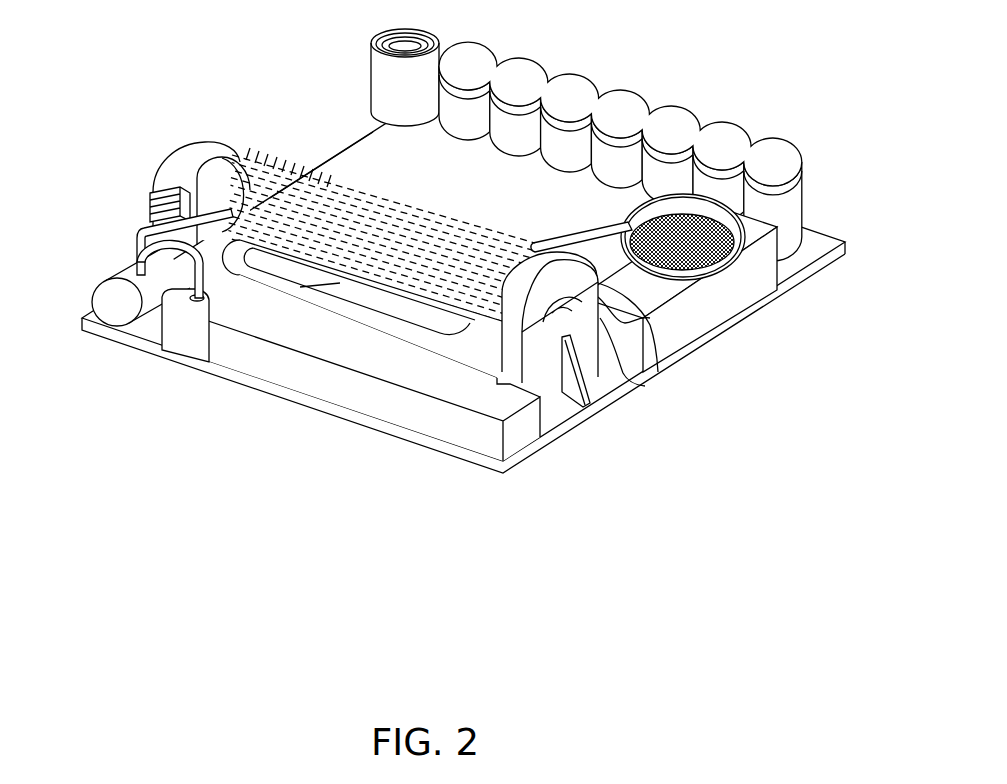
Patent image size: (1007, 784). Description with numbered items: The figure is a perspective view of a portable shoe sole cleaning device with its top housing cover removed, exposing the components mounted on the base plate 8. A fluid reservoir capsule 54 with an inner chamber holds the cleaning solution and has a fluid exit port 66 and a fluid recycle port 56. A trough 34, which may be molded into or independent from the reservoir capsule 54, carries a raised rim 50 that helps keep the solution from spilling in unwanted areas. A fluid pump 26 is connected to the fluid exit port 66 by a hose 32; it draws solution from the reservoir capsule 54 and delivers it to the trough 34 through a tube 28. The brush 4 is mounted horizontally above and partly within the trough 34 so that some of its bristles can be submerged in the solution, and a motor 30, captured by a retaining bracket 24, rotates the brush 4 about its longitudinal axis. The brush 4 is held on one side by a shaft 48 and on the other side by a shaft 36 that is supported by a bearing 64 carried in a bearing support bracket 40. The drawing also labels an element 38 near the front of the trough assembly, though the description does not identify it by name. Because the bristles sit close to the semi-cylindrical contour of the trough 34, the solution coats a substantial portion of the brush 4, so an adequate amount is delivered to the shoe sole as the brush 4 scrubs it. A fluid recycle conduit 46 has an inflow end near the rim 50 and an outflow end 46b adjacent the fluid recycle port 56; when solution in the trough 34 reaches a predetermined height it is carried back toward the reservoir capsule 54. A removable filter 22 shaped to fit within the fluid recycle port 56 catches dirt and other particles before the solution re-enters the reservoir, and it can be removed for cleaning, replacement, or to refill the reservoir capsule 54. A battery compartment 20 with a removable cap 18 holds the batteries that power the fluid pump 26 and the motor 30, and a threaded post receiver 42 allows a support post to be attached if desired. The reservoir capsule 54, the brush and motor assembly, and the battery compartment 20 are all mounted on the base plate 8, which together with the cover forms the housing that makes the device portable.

The brush 4 is at (303, 167).
The base plate 8 is at (620, 410).
The cap 18 is at (657, 151).
The battery compartment 20 is at (793, 202).
The filter 22 is at (750, 312).
The retaining bracket 24 is at (199, 146).
The fluid pump 26 is at (113, 272).
The tube 28 is at (138, 230).
The motor 30 is at (207, 197).
The hose 32 is at (165, 303).
The trough 34 is at (340, 283).
The shaft 36 is at (660, 355).
The front rail 38 is at (510, 320).
The bearing support bracket 40 is at (540, 430).
The threaded post receiver 42 is at (378, 65).
The fluid recycle conduit 46 is at (560, 233).
The outflow end 46b is at (627, 227).
The shaft 48 is at (230, 173).
The rim 50 is at (360, 320).
The fluid reservoir capsule 54 is at (363, 140).
The fluid recycle port 56 is at (807, 233).
The bearing 64 is at (633, 387).
The fluid exit port 66 is at (200, 297).